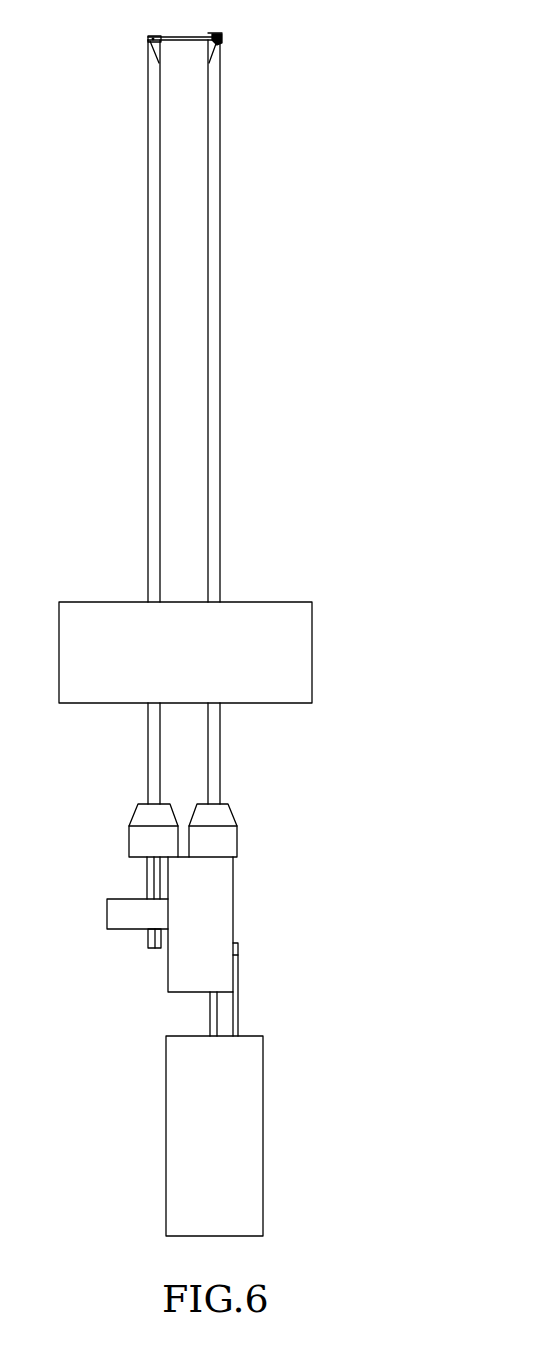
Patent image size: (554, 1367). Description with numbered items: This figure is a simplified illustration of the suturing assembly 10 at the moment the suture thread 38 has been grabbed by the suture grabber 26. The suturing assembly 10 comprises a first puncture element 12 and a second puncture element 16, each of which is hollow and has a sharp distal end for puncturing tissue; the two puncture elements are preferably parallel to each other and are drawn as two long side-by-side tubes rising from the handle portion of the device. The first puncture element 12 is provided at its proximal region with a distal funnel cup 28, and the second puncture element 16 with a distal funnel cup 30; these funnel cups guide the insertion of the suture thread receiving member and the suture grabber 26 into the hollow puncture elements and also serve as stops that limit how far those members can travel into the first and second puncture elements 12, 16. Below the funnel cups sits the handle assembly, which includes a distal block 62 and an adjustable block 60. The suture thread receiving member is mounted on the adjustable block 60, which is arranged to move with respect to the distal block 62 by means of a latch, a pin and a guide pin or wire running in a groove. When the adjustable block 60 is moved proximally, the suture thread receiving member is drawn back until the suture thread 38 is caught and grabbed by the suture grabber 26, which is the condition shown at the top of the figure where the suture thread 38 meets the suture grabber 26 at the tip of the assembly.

The suturing assembly 10 is at (338, 452).
The first puncture element 12 is at (220, 258).
The second puncture element 16 is at (148, 260).
The suture grabber 26 is at (172, 37).
The suture thread 38 is at (222, 43).
The distal funnel cup 28 is at (228, 840).
The distal funnel cup 30 is at (138, 840).
The distal block 62 is at (220, 905).
The adjustable block 60 is at (235, 1132).